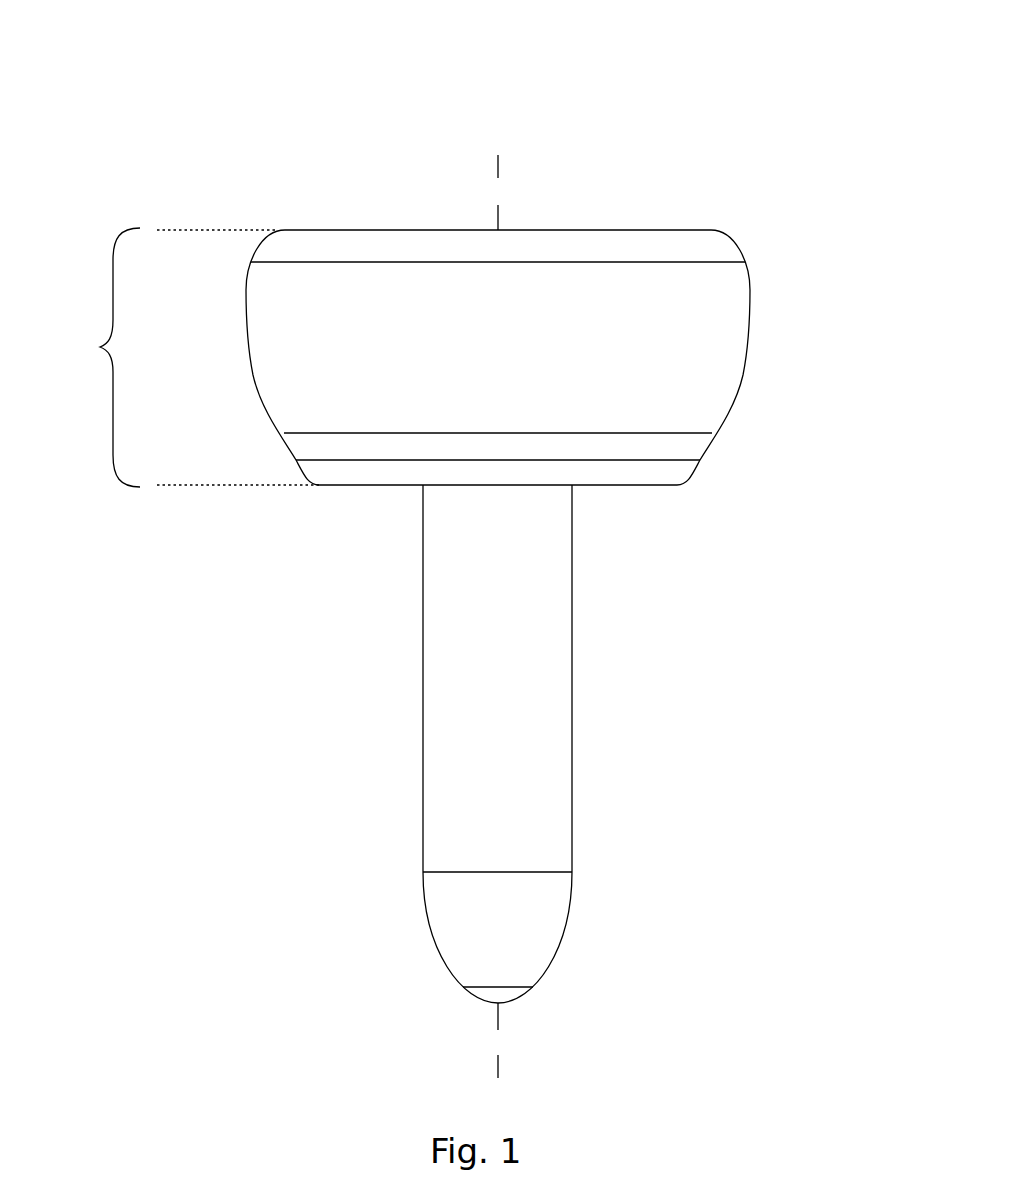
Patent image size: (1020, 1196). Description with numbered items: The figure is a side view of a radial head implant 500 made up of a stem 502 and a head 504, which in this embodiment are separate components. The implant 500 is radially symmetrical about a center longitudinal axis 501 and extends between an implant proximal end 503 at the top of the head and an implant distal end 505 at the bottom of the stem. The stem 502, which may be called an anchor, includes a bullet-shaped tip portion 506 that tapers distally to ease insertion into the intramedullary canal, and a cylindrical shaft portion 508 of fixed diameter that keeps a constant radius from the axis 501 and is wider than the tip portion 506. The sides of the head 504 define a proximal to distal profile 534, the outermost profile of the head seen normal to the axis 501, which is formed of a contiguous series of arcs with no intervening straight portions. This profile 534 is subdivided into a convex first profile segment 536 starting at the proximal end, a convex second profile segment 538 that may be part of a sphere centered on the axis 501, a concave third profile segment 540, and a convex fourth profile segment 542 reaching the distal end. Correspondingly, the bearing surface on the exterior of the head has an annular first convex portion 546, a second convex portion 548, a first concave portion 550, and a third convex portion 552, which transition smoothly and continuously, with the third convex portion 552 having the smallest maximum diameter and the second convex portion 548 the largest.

The radial head implant 500 is at (773, 153).
The center longitudinal axis 501 is at (497, 173).
The stem 502 is at (595, 702).
The implant proximal end 503 is at (604, 212).
The head 504 is at (701, 517).
The implant distal end 505 is at (580, 990).
The tip portion 506 is at (432, 928).
The shaft portion 508 is at (422, 690).
The proximal to distal profile 534 is at (184, 357).
The first profile segment 536 is at (255, 253).
The second profile segment 538 is at (253, 378).
The third profile segment 540 is at (288, 450).
The fourth profile segment 542 is at (297, 468).
The first convex portion 546 is at (723, 247).
The second convex portion 548 is at (725, 337).
The first concave portion 550 is at (687, 442).
The third convex portion 552 is at (672, 470).